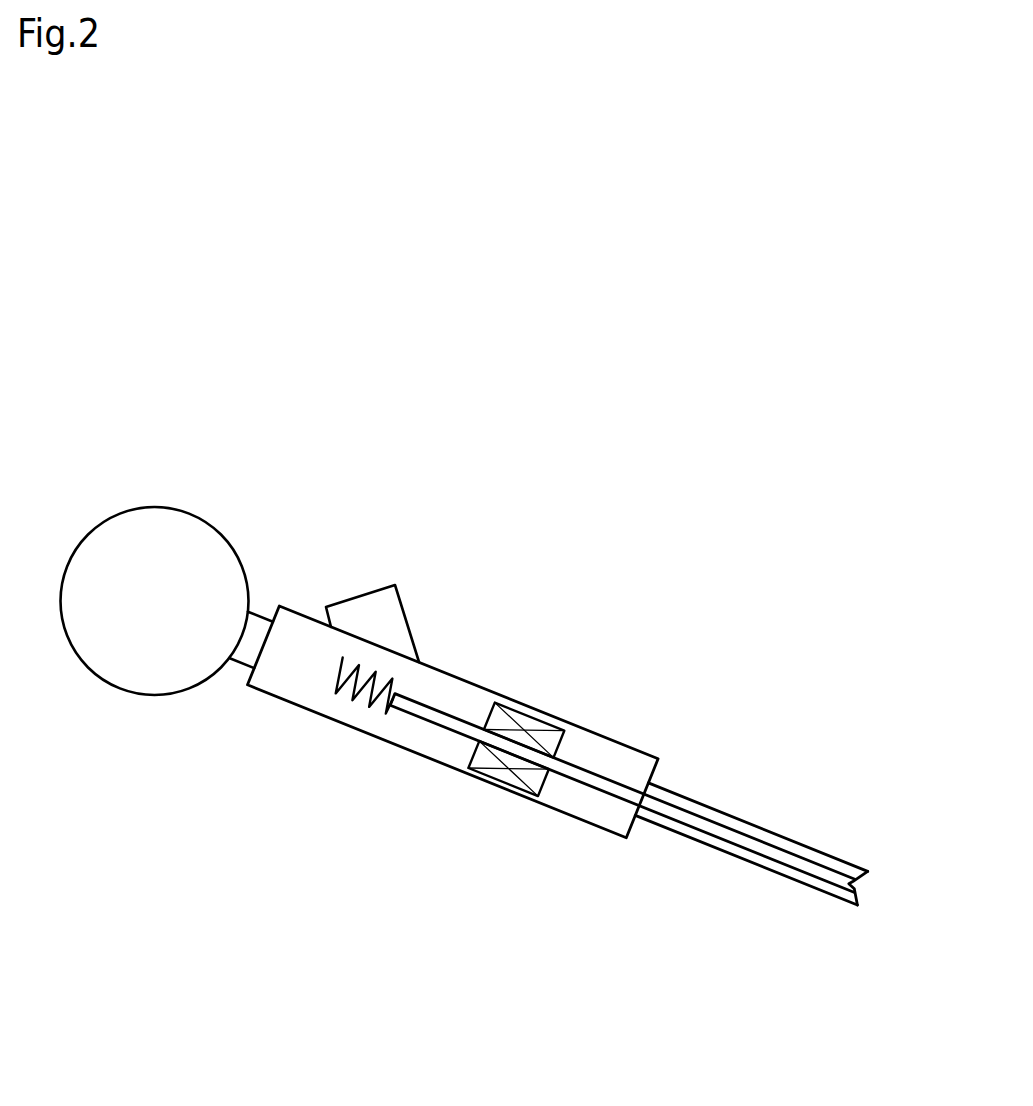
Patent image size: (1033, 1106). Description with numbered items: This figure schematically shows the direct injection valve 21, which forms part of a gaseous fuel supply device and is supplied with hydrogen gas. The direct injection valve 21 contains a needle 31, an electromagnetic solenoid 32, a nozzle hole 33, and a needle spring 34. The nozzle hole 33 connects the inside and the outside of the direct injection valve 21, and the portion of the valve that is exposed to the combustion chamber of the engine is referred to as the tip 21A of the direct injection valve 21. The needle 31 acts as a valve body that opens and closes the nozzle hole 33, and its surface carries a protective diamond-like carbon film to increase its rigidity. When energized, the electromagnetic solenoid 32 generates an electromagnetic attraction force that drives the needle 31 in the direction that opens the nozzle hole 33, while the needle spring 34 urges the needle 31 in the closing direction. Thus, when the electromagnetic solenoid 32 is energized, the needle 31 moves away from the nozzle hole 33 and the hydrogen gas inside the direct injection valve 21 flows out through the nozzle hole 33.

The direct injection valve 21 is at (580, 613).
The tip 21A is at (803, 842).
The needle 31 is at (602, 773).
The electromagnetic solenoid 32 is at (530, 720).
The nozzle hole 33 is at (860, 888).
The needle spring 34 is at (353, 702).